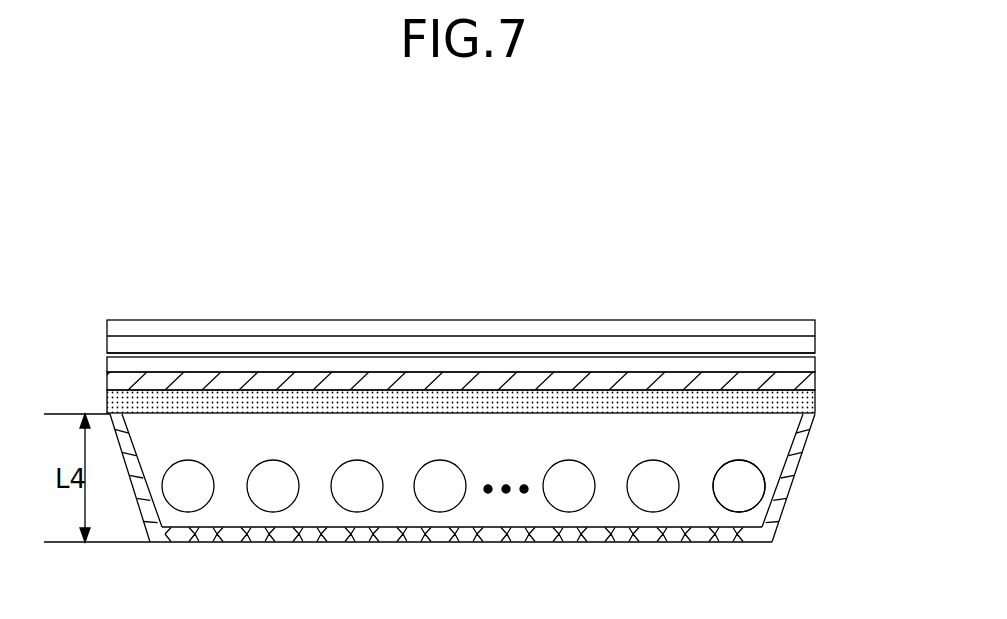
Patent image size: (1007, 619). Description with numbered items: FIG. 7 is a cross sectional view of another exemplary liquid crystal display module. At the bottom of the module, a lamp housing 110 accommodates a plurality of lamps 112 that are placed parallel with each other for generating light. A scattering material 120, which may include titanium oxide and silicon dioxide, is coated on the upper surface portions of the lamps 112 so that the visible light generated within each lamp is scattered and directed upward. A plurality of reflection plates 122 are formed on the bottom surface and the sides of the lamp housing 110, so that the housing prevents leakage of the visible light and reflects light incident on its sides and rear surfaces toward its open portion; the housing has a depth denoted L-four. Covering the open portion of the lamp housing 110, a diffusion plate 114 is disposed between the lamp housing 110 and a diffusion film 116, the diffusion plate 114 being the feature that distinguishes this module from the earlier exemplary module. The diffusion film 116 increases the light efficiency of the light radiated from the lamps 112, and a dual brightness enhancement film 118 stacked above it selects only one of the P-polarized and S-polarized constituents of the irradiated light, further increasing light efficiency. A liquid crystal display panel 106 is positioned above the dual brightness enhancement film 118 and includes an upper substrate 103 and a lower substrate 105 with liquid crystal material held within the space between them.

The upper substrate 103 is at (605, 330).
The lower substrate 105 is at (665, 348).
The liquid crystal display panel 106 is at (461, 286).
The lamp housing 110 is at (772, 539).
The lamps 112 is at (753, 507).
The diffusion plate 114 is at (795, 407).
The diffusion film 116 is at (792, 388).
The dual brightness enhancement film (DBEF) 118 is at (790, 371).
The scattering material 120 is at (753, 463).
The reflection plates 122 is at (572, 537).